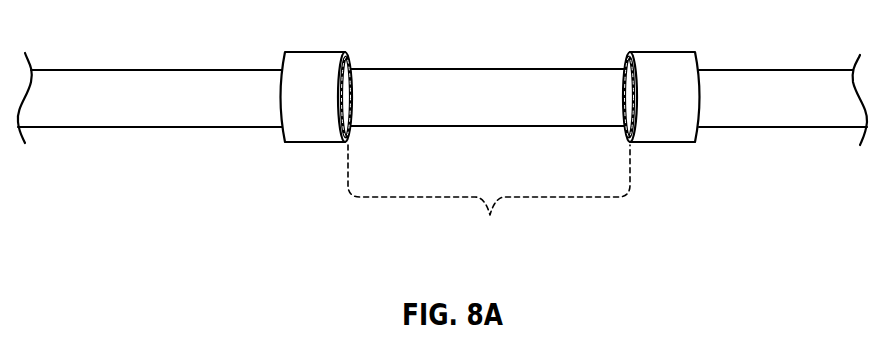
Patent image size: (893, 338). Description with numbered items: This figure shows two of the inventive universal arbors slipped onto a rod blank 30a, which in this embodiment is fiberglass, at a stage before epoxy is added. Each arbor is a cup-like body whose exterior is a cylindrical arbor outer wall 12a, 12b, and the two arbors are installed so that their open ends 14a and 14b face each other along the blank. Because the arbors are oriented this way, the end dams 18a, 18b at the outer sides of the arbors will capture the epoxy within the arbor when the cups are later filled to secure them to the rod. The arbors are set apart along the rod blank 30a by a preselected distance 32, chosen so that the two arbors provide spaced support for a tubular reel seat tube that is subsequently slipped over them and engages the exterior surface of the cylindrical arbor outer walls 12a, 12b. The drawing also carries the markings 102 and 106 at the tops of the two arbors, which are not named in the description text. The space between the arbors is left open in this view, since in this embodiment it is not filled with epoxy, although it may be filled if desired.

The first weld/joint 102 is at (302, 49).
The second weld/joint 106 is at (669, 48).
The cylindrical arbor outer wall 12a is at (313, 144).
The cylindrical arbor outer wall 12b is at (662, 144).
The open end 14a is at (355, 63).
The open end 14b is at (613, 63).
The end dam 18a is at (278, 131).
The end dam 18b is at (700, 131).
The rod blank 30a is at (490, 105).
The preselected distance 32 is at (489, 199).